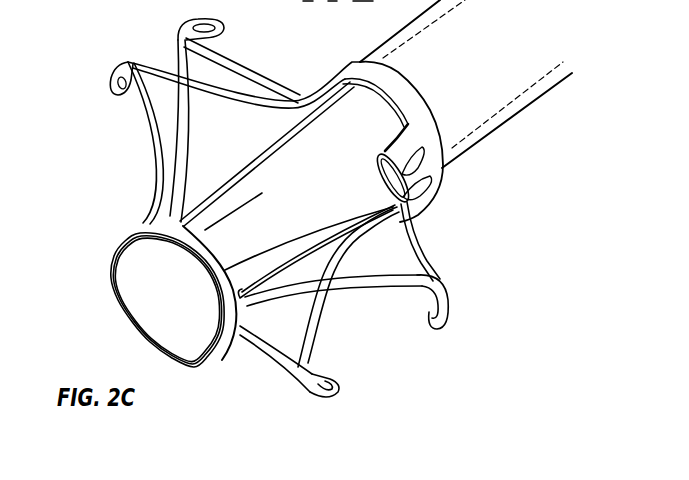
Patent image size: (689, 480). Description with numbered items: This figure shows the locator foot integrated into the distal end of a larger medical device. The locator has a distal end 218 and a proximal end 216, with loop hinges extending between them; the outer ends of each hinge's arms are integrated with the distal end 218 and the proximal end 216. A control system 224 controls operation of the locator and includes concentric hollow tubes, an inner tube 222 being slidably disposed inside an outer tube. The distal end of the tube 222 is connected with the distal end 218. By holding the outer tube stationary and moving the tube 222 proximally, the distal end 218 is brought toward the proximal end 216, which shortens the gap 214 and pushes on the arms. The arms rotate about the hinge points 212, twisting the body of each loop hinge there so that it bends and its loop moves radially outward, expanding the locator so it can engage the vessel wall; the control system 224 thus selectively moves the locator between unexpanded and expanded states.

The hinge points 212 is at (405, 218).
The gap 214 is at (145, 62).
The proximal end 216 is at (111, 82).
The distal end 218 is at (143, 224).
The tube 222 is at (287, 143).
The control system 224 is at (521, 139).